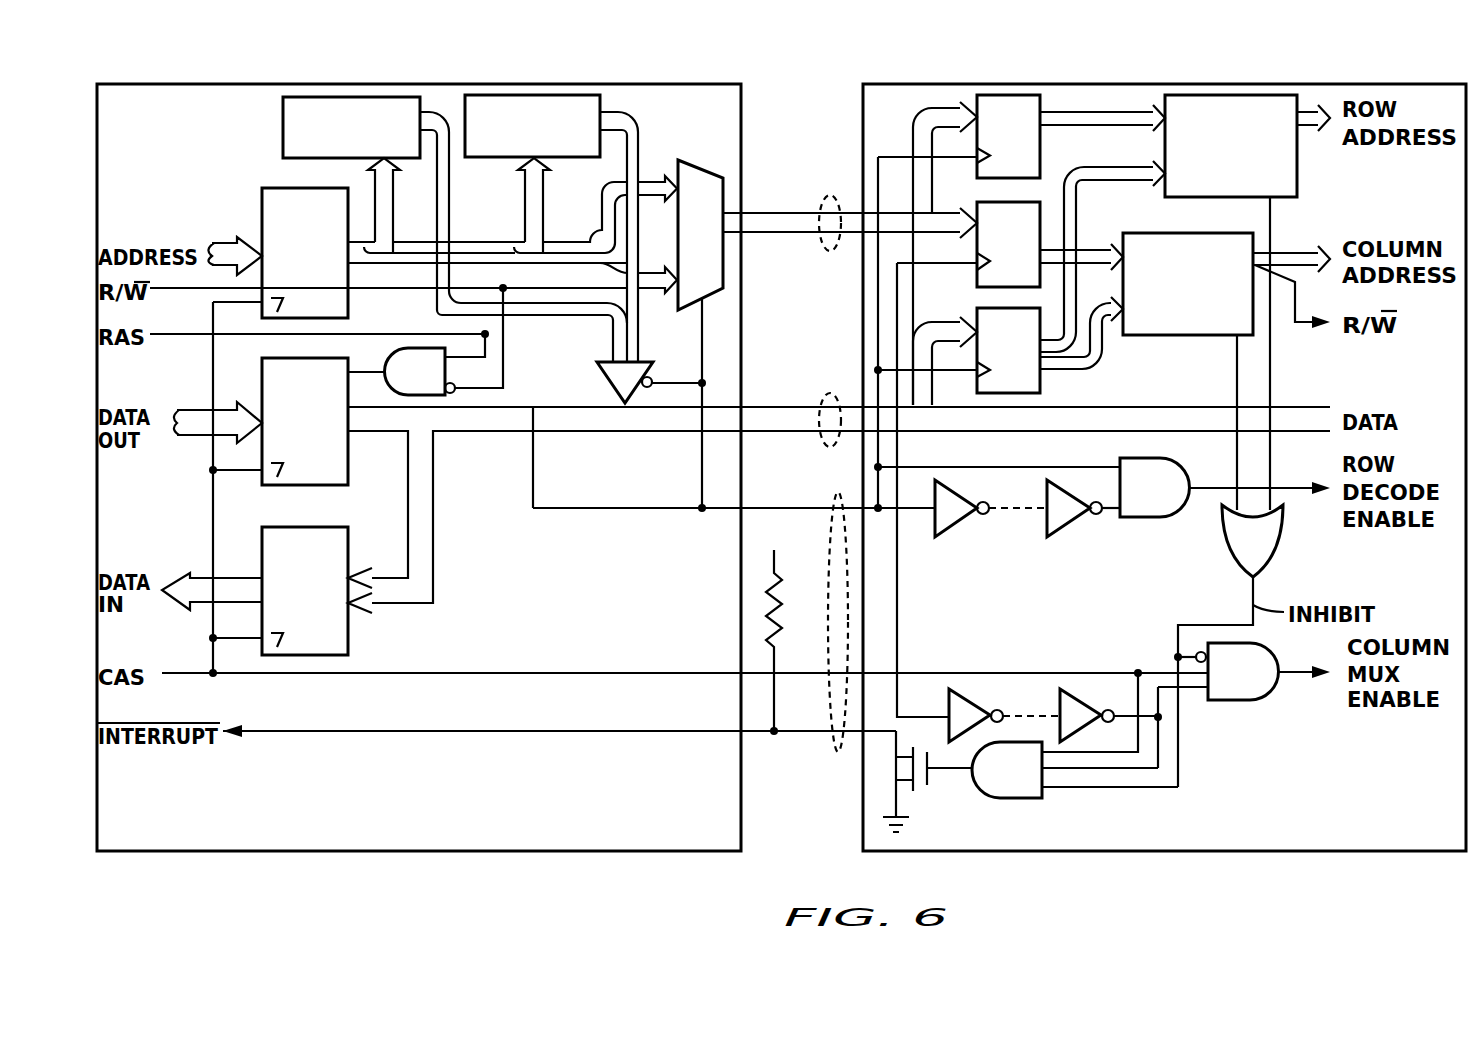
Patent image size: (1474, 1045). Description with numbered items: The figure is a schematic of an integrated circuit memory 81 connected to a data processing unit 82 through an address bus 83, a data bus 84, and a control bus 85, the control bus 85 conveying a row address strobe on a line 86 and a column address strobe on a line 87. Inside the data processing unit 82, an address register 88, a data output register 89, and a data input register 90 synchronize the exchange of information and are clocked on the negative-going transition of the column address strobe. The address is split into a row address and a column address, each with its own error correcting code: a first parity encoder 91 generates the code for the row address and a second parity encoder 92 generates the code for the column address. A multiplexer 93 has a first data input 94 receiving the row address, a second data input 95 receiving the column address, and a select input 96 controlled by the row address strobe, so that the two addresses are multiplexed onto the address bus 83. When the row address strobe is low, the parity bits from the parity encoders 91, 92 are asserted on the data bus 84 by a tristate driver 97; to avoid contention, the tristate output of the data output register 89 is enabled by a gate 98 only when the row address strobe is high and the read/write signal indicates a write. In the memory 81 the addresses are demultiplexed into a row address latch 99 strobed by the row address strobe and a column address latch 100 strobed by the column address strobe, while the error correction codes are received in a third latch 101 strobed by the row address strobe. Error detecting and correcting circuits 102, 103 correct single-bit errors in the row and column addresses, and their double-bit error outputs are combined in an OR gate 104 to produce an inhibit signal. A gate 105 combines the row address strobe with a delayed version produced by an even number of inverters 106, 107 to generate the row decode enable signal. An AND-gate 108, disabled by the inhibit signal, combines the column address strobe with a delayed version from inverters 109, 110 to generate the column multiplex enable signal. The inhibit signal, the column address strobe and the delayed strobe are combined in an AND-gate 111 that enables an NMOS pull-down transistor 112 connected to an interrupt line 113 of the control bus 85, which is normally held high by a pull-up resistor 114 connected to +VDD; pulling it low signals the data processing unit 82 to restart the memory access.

The integrated circuit memory 81 is at (1300, 852).
The data processing unit 82 is at (577, 852).
The address bus 83 is at (830, 195).
The data bus 84 is at (830, 393).
The control bus 85 is at (836, 753).
The row address strobe line 86 is at (790, 505).
The column address strobe line 87 is at (813, 674).
The address register 88 is at (268, 188).
The data output register 89 is at (285, 485).
The data input register 90 is at (348, 625).
The first parity encoder 91 is at (283, 145).
The second parity encoder 92 is at (502, 160).
The multiplexer 93 is at (723, 270).
The first data input 94 is at (658, 180).
The second data input 95 is at (657, 291).
The select input 96 is at (702, 328).
The tristate driver 97 is at (607, 362).
The gate 98 is at (402, 348).
The row address latch 99 is at (1040, 150).
The column address latch 100 is at (977, 287).
The third latch 101 is at (1040, 385).
The error detecting and correcting circuit 102 is at (1297, 172).
The error detecting and correcting circuit 103 is at (1213, 335).
The OR gate 104 is at (1280, 555).
The gate 105 is at (1145, 520).
The inverter 106 is at (947, 535).
The inverter 107 is at (1060, 535).
The AND-gate 108 is at (1235, 700).
The inverter 109 is at (975, 688).
The inverter 110 is at (1085, 688).
The AND-gate 111 is at (1005, 800).
The NMOS pull-down transistor 112 is at (930, 790).
The interrupt line 113 is at (806, 732).
The pull-up resistor 114 is at (768, 623).